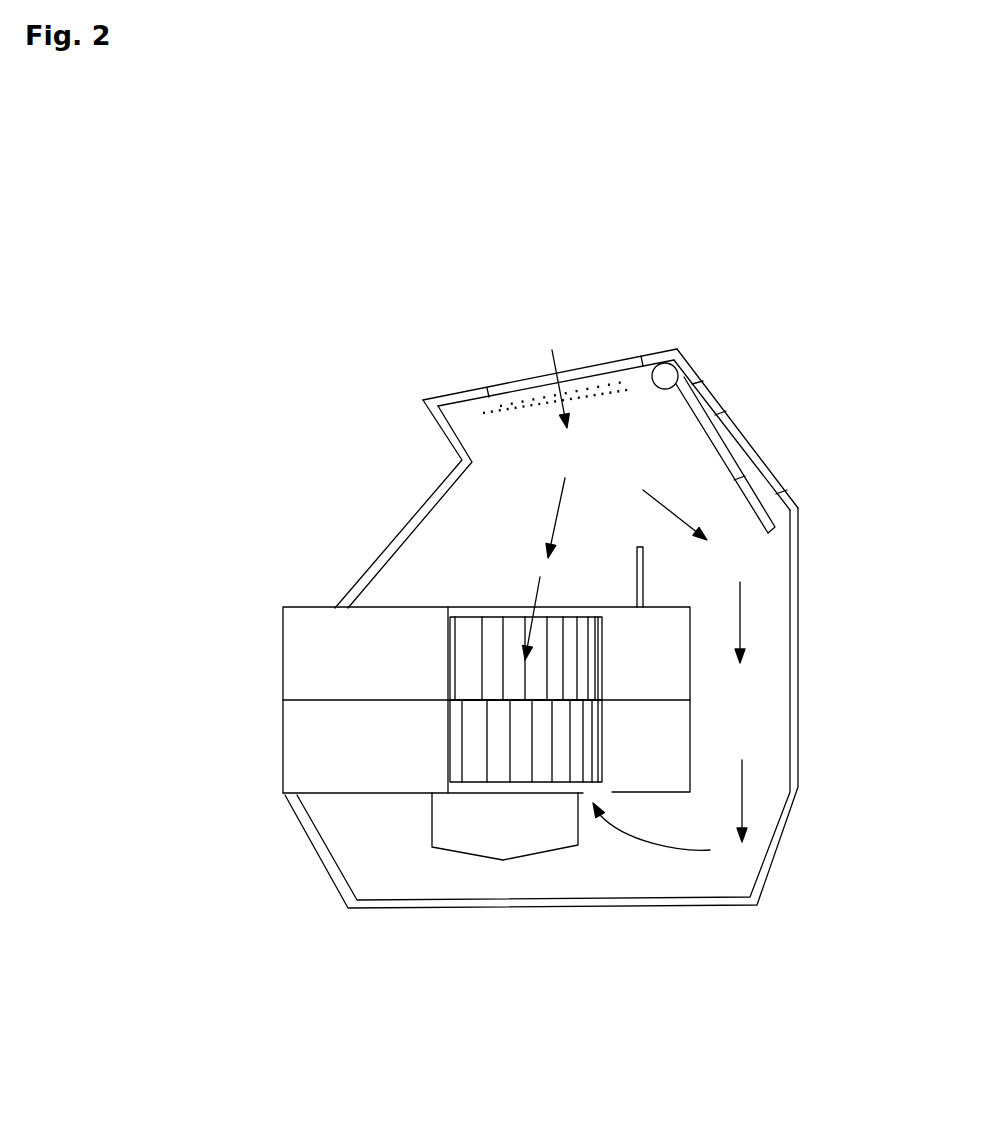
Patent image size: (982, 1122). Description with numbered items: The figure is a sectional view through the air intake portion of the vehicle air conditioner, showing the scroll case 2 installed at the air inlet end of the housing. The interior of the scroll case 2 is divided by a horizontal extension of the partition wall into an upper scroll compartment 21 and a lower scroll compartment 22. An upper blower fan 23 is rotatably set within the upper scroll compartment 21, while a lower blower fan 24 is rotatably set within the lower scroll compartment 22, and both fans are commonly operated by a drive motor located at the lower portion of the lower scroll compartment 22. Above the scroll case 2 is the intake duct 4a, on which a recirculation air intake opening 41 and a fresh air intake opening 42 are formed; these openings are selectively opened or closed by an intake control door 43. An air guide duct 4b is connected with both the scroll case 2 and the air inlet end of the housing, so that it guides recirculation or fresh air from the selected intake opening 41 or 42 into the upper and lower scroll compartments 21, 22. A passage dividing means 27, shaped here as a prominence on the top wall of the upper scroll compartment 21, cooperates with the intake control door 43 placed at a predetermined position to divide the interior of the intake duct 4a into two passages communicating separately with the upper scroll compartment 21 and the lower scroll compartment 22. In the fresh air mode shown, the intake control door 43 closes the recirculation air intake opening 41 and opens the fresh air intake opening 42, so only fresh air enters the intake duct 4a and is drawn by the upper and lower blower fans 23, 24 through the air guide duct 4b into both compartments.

The scroll case 2 is at (571, 741).
The intake duct 4a is at (614, 416).
The air guide duct 4b is at (784, 878).
The upper scroll compartment 21 is at (388, 620).
The lower scroll compartment 22 is at (328, 790).
The upper blower fan 23 is at (463, 668).
The lower blower fan 24 is at (463, 753).
The passage dividing means 27 is at (643, 567).
The recirculation air intake opening 41 is at (722, 413).
The fresh air intake opening 42 is at (615, 368).
The intake control door 43 is at (742, 478).